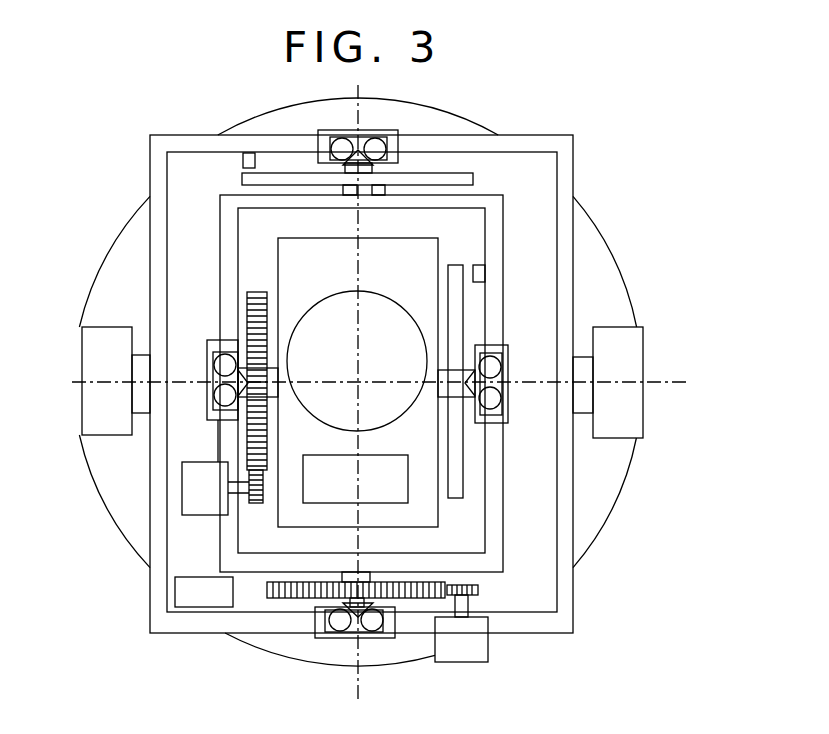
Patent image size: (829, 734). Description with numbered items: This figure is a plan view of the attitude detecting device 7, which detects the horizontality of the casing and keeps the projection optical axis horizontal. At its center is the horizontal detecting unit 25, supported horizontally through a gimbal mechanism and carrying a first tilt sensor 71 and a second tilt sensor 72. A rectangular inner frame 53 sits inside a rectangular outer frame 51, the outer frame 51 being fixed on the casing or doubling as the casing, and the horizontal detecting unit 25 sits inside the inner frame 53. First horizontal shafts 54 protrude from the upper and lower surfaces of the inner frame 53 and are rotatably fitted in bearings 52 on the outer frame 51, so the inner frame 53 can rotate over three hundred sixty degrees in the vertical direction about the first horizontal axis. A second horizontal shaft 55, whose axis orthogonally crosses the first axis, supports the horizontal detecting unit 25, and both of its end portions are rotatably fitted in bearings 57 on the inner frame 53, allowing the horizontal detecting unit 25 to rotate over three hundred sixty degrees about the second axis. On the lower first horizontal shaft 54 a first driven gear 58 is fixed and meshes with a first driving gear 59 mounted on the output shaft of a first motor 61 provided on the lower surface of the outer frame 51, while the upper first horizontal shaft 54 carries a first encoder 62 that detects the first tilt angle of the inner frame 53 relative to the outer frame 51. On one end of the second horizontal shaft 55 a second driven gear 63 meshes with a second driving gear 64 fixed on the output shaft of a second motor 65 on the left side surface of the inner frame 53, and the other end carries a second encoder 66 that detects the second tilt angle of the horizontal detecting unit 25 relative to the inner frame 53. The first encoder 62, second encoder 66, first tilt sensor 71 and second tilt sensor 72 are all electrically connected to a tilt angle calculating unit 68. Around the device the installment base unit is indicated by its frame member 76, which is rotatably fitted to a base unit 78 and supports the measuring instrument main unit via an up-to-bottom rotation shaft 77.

The attitude detecting device 7 is at (222, 184).
The horizontal detecting unit 25 is at (420, 238).
The outer frame 51 is at (540, 135).
The bearing 52 is at (392, 131).
The inner frame 53 is at (492, 195).
The first horizontal shaft 54 is at (380, 165).
The second horizontal shaft 55 is at (467, 368).
The bearing 57 is at (207, 345).
The first driven gear 58 is at (266, 590).
The first driving gear 59 is at (479, 590).
The first motor 61 is at (488, 650).
The first encoder 62 is at (262, 163).
The second driven gear 63 is at (255, 292).
The second driving gear 64 is at (254, 504).
The second motor 65 is at (190, 517).
The second encoder 66 is at (471, 258).
The tilt angle calculating unit 68 is at (175, 590).
The first tilt sensor 71 is at (328, 292).
The second tilt sensor 72 is at (383, 453).
The frame member 76 is at (617, 440).
The up-to-bottom rotation shaft 77 is at (582, 357).
The base unit 78 is at (586, 213).